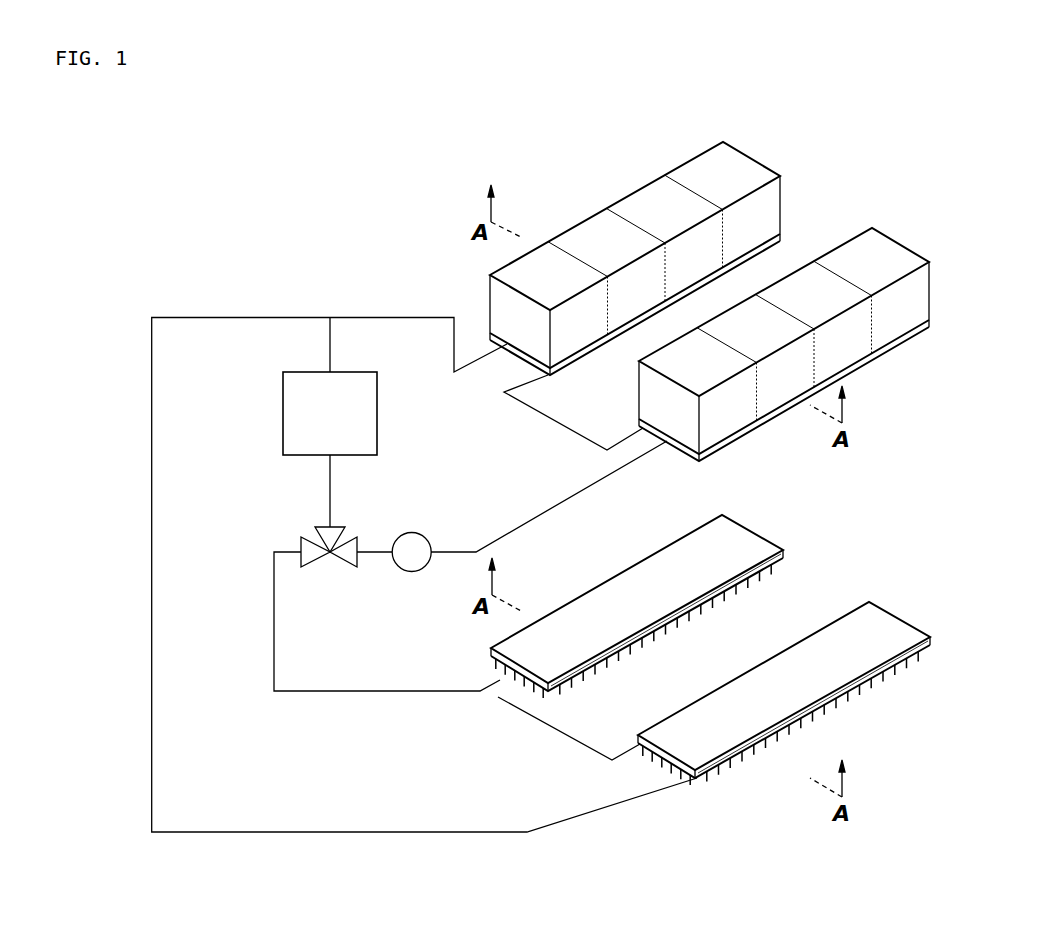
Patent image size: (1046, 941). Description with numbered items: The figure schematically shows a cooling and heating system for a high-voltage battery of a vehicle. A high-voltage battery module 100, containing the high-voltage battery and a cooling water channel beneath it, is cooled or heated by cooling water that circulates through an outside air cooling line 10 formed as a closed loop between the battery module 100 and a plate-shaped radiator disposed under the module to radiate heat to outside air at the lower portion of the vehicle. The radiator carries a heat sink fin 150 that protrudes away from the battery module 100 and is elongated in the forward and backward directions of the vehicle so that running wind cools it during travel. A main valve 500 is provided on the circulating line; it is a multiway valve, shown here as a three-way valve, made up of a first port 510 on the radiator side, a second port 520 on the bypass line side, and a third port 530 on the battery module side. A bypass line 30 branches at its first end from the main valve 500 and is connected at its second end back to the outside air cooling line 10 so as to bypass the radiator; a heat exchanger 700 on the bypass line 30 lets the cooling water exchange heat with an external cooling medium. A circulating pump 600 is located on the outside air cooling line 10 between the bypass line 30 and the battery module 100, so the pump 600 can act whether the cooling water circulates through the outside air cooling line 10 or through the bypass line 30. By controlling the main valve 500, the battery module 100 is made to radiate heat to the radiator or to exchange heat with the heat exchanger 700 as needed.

The outside air cooling line 10 is at (152, 443).
The bypass line 30 is at (328, 497).
The high-voltage battery module 100 is at (608, 253).
The heat sink fin 150 is at (780, 759).
The main valve 500 is at (287, 546).
The first port 510 is at (313, 558).
The second port 520 is at (334, 533).
The third port 530 is at (358, 581).
The circulating pump 600 is at (412, 532).
The heat exchanger 700 is at (283, 412).